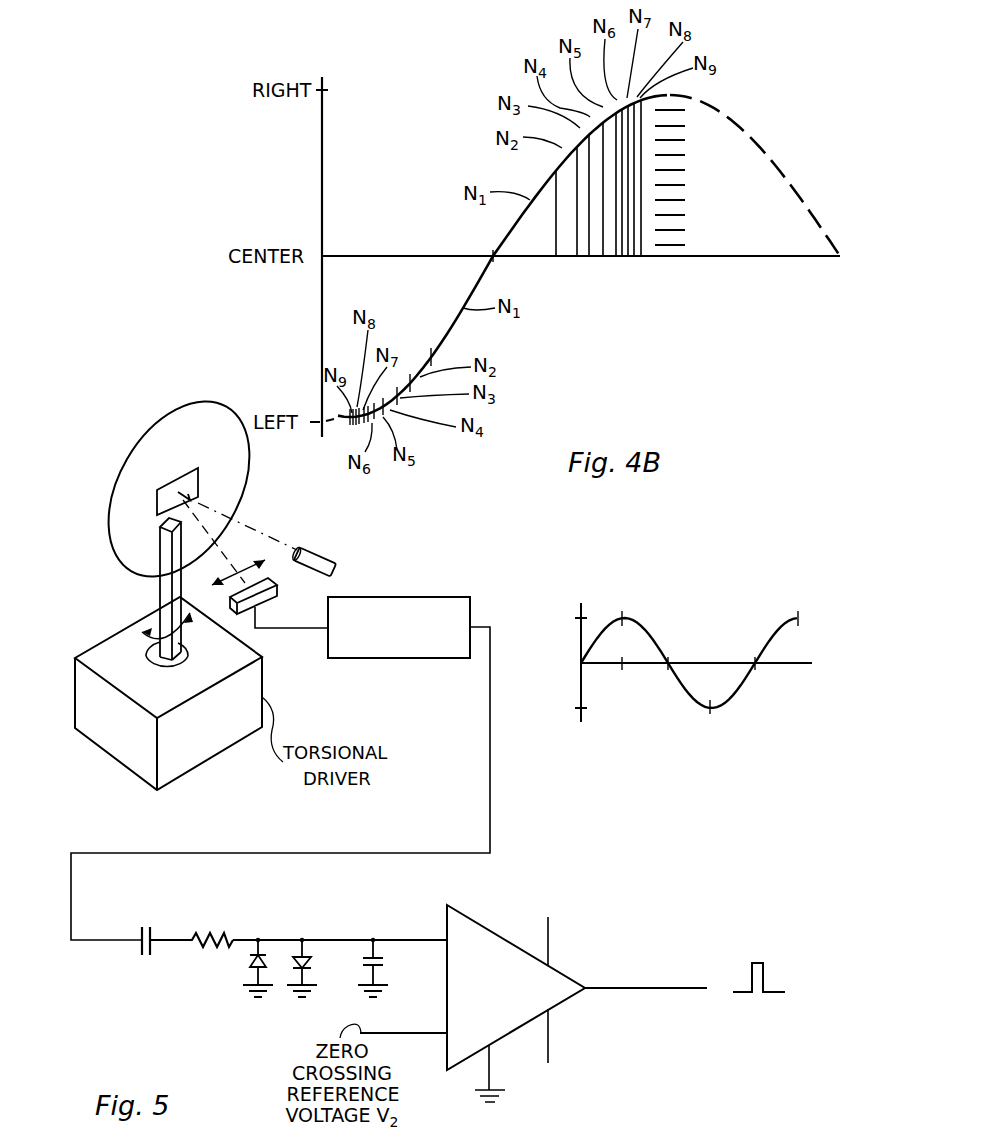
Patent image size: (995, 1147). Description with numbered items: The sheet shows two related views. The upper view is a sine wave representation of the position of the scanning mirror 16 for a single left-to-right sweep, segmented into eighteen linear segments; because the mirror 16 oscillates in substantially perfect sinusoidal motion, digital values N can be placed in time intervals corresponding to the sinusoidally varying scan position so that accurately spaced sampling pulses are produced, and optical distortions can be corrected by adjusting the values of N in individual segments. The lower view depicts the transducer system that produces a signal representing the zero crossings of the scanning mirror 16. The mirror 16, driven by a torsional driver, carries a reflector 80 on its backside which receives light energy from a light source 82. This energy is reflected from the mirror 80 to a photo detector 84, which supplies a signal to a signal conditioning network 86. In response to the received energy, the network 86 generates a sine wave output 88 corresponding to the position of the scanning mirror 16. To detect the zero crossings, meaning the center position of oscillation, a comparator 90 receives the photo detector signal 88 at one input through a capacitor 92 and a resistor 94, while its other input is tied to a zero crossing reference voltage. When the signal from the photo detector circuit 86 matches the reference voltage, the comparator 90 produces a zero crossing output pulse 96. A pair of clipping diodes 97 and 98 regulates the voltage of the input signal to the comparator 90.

The scanning mirror 16 is at (152, 433).
The reflector 80 is at (157, 506).
The light source 82 is at (330, 557).
The photo detector 84 is at (278, 588).
The signal conditioning network 86 is at (423, 658).
The sine wave output 88 is at (767, 637).
The comparator 90 is at (516, 997).
The capacitor 92 is at (145, 925).
The resistor 94 is at (213, 934).
The zero crossing output pulse 96 is at (767, 977).
The clipping diode 97 is at (250, 960).
The clipping diode 98 is at (293, 972).